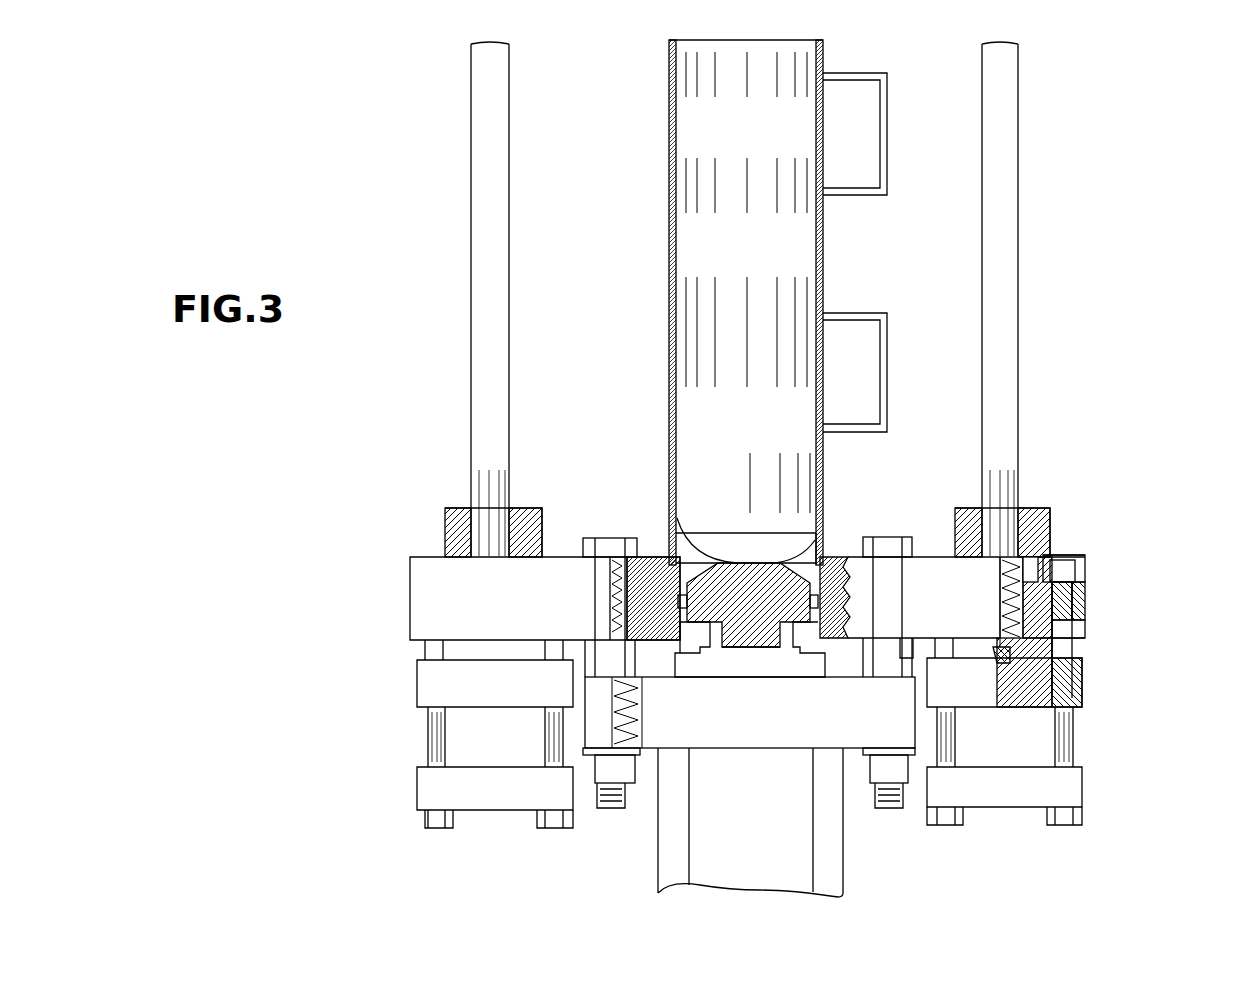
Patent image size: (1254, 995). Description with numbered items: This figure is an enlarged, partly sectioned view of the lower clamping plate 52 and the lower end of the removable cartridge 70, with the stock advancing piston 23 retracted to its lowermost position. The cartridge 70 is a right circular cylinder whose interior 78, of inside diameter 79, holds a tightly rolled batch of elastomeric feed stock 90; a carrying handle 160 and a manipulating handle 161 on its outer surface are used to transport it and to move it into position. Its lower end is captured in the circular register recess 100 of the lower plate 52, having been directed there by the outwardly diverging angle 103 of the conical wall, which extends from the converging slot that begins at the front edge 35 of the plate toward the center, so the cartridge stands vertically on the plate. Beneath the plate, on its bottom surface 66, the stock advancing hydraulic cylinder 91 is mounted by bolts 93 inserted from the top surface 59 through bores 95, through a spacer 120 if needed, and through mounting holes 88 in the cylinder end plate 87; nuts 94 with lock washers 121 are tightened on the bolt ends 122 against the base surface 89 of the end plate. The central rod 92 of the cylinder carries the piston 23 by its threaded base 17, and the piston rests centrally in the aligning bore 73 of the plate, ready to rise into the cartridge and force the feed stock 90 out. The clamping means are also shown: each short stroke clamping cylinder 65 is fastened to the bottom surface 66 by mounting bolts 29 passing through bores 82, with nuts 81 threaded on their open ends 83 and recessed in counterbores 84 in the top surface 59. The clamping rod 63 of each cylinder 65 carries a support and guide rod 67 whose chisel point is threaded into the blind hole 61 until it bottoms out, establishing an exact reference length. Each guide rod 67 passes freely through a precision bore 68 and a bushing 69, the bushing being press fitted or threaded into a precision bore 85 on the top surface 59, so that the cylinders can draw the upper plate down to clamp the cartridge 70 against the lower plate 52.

The threaded base 17 is at (738, 635).
The stock advancing piston 23 is at (730, 620).
The mounting bolts 29 is at (1073, 828).
The front edge 35 is at (906, 618).
The lower clamping plate 52 is at (1078, 590).
The top surface 59 is at (857, 557).
The blind hole 61 is at (995, 652).
The clamping rod 63 is at (1040, 683).
The clamping cylinder 65 is at (1007, 738).
The bottom surface 66 is at (1083, 638).
The support and guide rod 67 is at (1020, 350).
The precision bore 68 is at (1083, 628).
The bushing 69 is at (1050, 512).
The cartridge 70 is at (669, 223).
The aligning bore 73 is at (735, 530).
The interior 78 is at (730, 145).
The inside diameter 79 is at (677, 242).
The nuts 81 is at (1085, 560).
The bores 82 is at (1083, 620).
The open ends 83 is at (1068, 558).
The counterbores 84 is at (1085, 580).
The precision bore 85 is at (1050, 530).
The cylinder end plate 87 is at (820, 730).
The mounting holes 88 is at (638, 712).
The base surface 89 is at (787, 752).
The feed stock 90 is at (765, 434).
The stock advancing hydraulic cylinder 91 is at (765, 868).
The central rod 92 is at (775, 667).
The bolts 93 is at (605, 538).
The nuts 94 is at (632, 773).
The bores 95 is at (610, 593).
The circular register recess 100 is at (683, 537).
The outwardly diverging angle 103 is at (830, 540).
The spacer 120 is at (590, 661).
The lock washers 121 is at (632, 752).
The end 122 is at (604, 808).
The carrying handle 160 is at (887, 177).
The manipulating handle 161 is at (866, 432).